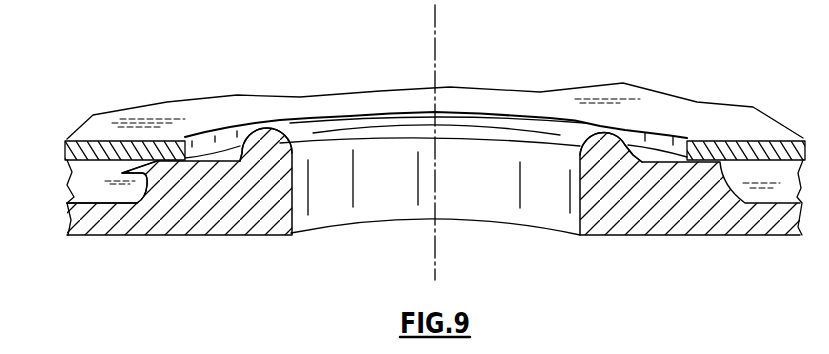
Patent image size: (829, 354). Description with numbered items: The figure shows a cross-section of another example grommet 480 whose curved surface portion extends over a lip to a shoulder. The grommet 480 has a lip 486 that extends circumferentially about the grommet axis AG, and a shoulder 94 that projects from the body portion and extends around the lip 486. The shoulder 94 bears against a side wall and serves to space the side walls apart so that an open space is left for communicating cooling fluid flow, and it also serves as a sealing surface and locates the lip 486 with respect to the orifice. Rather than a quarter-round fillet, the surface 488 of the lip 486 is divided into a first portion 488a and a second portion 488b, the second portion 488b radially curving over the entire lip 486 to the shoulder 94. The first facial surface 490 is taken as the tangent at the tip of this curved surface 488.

The grommet 480 is at (236, 252).
The first facial surface 490 is at (263, 128).
The lip 486 is at (605, 135).
The shoulder 94 is at (121, 174).
The surface 488 is at (436, 148).
The first portion of the surface 488a is at (320, 208).
The second portion of the surface 488b is at (300, 133).
The axis of the grommet AG is at (437, 70).